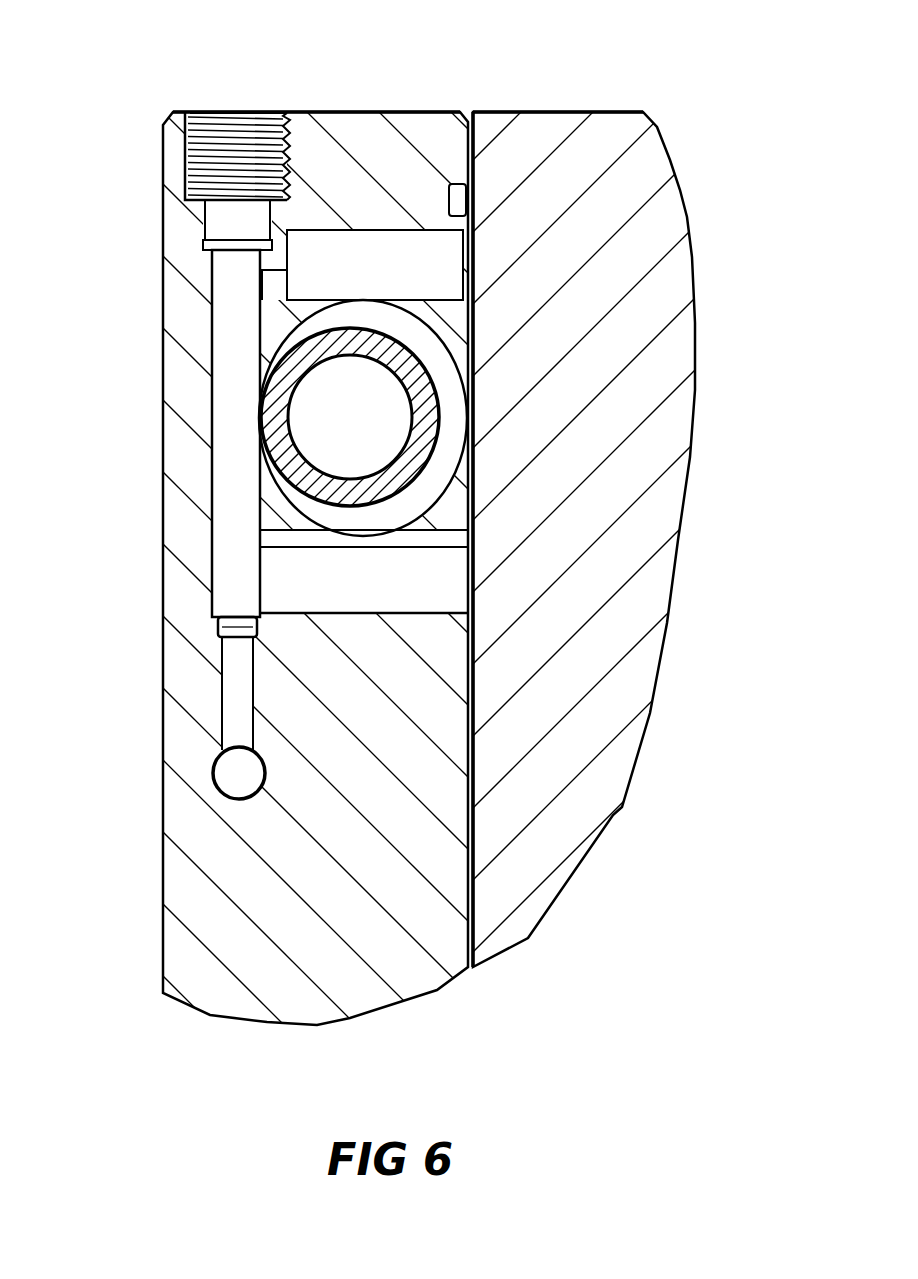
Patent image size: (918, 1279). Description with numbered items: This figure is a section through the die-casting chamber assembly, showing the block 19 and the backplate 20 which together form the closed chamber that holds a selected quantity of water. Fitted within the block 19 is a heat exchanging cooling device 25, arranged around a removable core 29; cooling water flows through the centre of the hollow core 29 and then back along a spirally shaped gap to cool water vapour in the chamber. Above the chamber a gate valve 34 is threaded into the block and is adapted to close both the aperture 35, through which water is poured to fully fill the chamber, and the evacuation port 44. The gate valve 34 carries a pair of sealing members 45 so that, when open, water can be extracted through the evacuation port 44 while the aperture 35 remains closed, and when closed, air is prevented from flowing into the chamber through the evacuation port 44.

The block 19 is at (637, 318).
The backplate 20 is at (267, 907).
The heat exchanging cooling device 25 is at (277, 497).
The removable core 29 is at (327, 410).
The gate valve 34 is at (192, 182).
The aperture 35 is at (251, 98).
The evacuation port 44 is at (237, 725).
The sealing members 45 is at (207, 253).